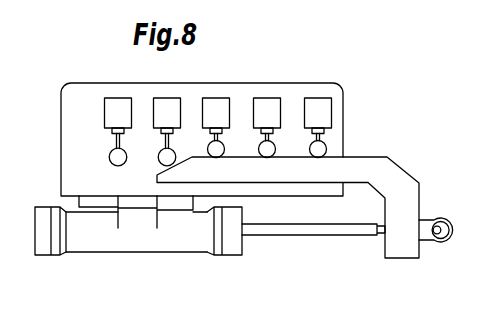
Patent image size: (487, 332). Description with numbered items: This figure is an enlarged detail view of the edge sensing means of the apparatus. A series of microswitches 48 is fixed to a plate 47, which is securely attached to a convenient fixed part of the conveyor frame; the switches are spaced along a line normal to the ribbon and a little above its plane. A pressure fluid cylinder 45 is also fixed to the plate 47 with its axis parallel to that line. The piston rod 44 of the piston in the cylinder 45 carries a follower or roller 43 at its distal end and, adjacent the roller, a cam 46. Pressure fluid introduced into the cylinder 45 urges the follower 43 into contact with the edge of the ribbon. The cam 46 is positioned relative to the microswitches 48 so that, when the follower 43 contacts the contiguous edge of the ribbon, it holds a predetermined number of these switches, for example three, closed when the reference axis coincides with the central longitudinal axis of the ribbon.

The follower or roller 43 is at (448, 223).
The piston rod 44 is at (308, 234).
The pressure fluid cylinder 45 is at (134, 239).
The cam 46 is at (357, 166).
The plate 47 is at (336, 93).
The microswitches 48 is at (262, 98).